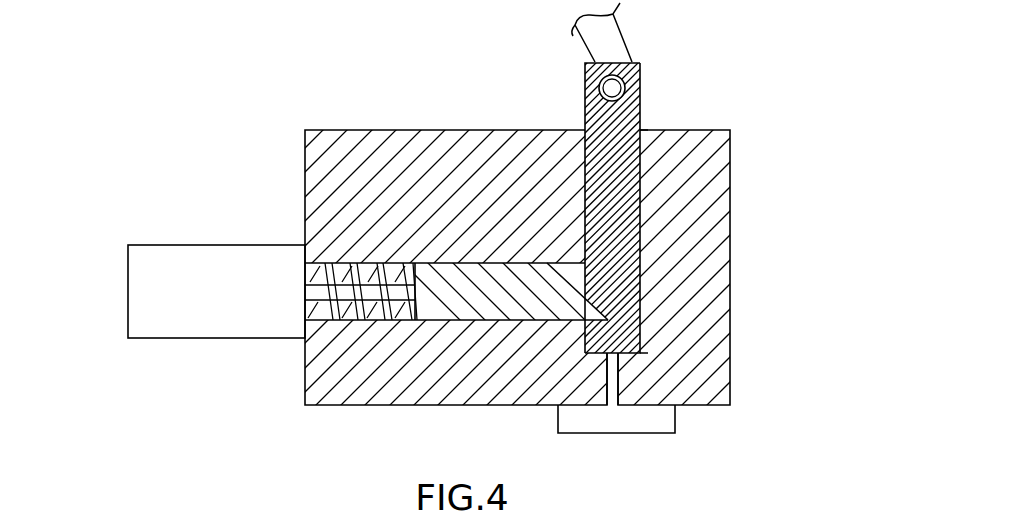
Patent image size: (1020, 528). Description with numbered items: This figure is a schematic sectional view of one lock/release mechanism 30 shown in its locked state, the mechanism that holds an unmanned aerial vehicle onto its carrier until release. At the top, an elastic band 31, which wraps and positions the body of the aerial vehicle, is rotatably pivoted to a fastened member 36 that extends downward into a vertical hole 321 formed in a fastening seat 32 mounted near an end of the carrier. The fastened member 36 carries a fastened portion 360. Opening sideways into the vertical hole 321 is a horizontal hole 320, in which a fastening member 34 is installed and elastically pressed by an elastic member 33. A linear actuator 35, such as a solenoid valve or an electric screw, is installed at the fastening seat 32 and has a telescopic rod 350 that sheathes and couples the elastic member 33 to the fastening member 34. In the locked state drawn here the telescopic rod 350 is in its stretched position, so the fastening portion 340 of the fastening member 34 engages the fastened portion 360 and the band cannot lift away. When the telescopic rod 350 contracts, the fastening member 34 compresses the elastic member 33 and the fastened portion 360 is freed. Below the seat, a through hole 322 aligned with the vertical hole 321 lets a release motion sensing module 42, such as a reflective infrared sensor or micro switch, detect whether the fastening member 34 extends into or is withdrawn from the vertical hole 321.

The lock/release mechanism 30 is at (750, 165).
The elastic band 31 is at (615, 36).
The fastening seat 32 is at (683, 312).
The elastic member 33 is at (323, 265).
The fastening member 34 is at (465, 310).
The linear actuator 35 is at (134, 283).
The fastened member 36 is at (642, 82).
The release motion sensing module 42 is at (675, 430).
The horizontal hole 320 is at (345, 324).
The vertical hole 321 is at (641, 203).
The through hole 322 is at (612, 378).
The fastening portion 340 is at (585, 352).
The telescopic rod 350 is at (372, 312).
The fastened portion 360 is at (641, 285).